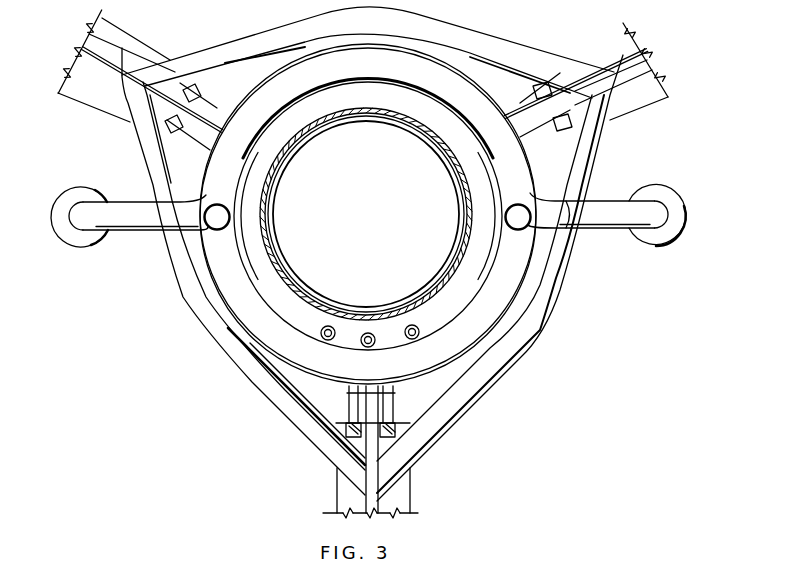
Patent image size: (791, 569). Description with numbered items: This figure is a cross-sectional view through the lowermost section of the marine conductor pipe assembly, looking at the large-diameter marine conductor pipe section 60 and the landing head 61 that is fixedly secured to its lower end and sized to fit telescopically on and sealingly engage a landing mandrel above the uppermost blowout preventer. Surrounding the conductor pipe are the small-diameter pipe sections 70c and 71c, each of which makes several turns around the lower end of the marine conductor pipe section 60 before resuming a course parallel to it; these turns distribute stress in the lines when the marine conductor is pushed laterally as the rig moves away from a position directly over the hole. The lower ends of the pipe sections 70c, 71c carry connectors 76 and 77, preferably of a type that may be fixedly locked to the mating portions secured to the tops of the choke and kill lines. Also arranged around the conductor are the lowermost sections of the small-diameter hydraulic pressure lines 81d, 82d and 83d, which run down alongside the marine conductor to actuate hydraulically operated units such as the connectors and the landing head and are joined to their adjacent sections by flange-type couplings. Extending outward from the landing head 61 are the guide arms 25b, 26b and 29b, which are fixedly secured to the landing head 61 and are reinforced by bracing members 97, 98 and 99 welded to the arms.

The guide arm 25b is at (122, 44).
The guide arm 26b is at (637, 99).
The guide arm 29b is at (398, 493).
The marine conductor pipe section 60 is at (467, 162).
The landing head 61 is at (402, 396).
The small-diameter pipe section 70c is at (126, 230).
The small-diameter pipe section 71c is at (608, 228).
The connector 76 is at (67, 242).
The connector 77 is at (658, 190).
The pressure line section 81d is at (320, 335).
The pressure line section 82d is at (364, 348).
The pressure line section 83d is at (415, 340).
The bracing member 97 is at (228, 47).
The bracing member 98 is at (252, 380).
The bracing member 99 is at (490, 380).